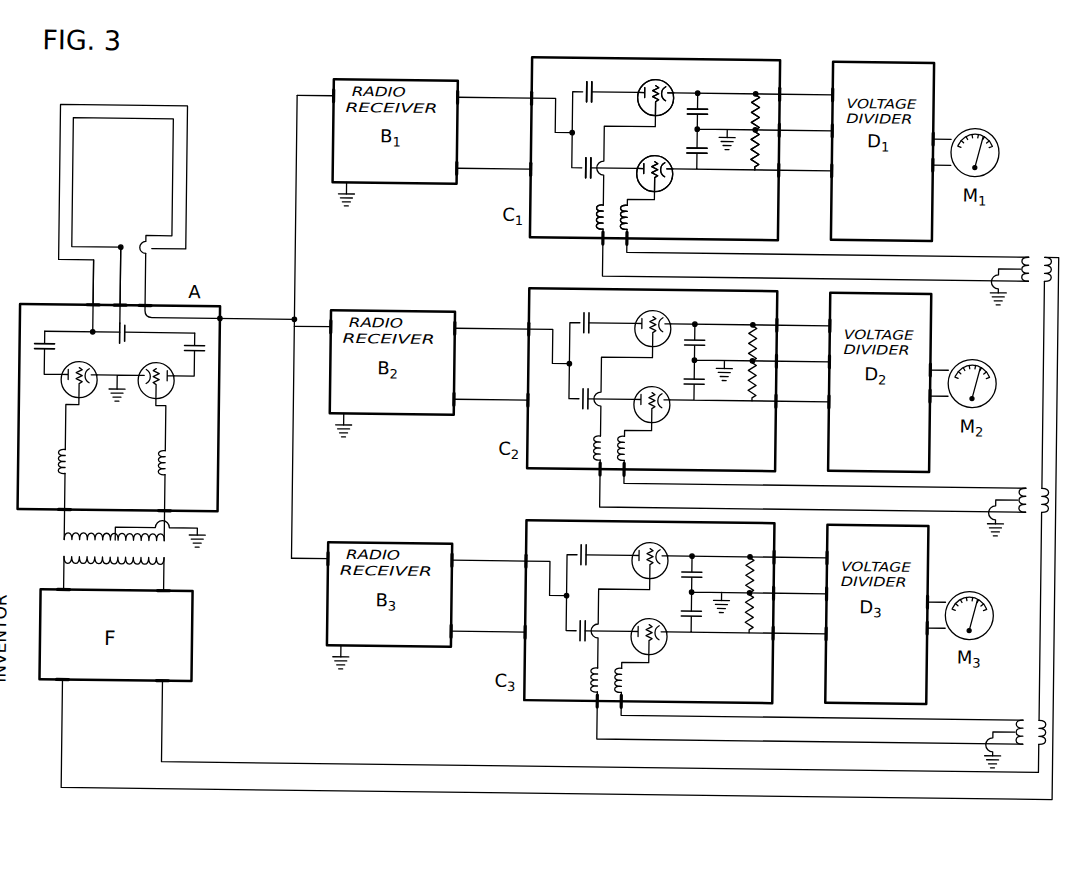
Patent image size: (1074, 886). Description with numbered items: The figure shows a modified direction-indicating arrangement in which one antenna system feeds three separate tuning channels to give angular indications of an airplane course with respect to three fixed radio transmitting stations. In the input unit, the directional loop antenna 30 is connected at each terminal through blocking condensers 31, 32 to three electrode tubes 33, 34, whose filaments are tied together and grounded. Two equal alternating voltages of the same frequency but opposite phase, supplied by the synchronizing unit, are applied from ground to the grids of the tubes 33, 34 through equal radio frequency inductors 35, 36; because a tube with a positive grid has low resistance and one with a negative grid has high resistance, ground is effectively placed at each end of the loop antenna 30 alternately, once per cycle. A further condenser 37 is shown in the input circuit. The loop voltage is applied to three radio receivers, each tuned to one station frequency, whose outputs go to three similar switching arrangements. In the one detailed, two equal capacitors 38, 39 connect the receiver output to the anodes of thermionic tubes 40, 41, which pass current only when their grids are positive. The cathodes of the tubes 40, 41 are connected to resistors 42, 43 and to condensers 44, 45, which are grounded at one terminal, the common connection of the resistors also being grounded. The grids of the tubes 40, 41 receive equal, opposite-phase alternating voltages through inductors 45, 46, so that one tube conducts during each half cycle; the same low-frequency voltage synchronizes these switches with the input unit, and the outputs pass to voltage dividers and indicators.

The loop antenna 30 is at (137, 205).
The blocking condenser 31 is at (56, 350).
The blocking condenser 32 is at (182, 352).
The three electrode tube 33 is at (70, 387).
The three electrode tube 34 is at (165, 388).
The radio frequency inductor 35 is at (50, 461).
The radio frequency inductor 36 is at (177, 463).
The condenser 37 is at (122, 343).
The capacitor 38 is at (590, 83).
The capacitor 39 is at (587, 161).
The thermionic tube 40 is at (663, 90).
The thermionic tube 41 is at (646, 168).
The resistor 42 is at (766, 112).
The resistor 43 is at (766, 150).
The condenser 44 is at (709, 114).
The condenser 45 is at (648, 188).
The inductor 46 is at (639, 217).